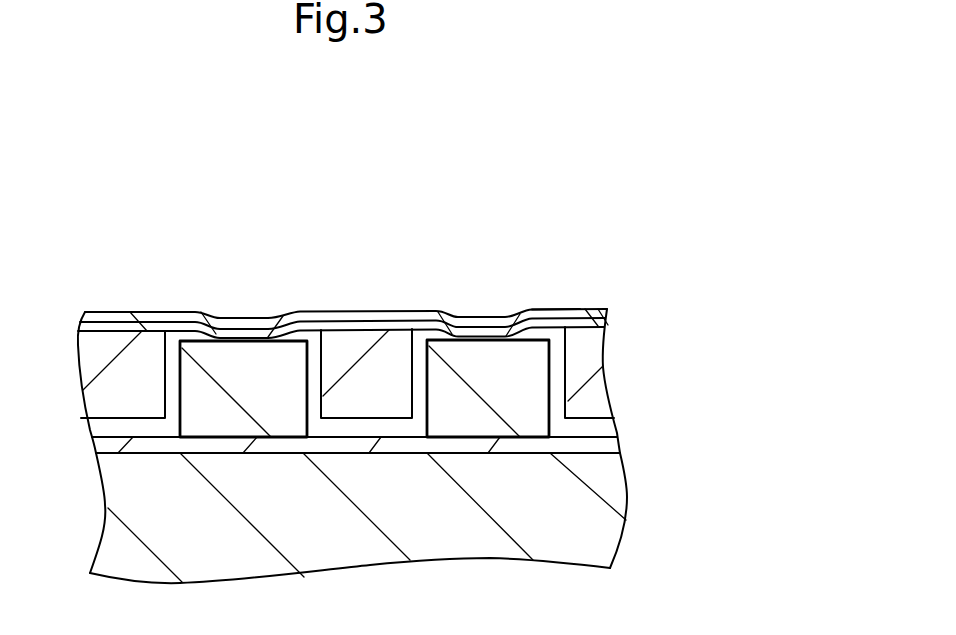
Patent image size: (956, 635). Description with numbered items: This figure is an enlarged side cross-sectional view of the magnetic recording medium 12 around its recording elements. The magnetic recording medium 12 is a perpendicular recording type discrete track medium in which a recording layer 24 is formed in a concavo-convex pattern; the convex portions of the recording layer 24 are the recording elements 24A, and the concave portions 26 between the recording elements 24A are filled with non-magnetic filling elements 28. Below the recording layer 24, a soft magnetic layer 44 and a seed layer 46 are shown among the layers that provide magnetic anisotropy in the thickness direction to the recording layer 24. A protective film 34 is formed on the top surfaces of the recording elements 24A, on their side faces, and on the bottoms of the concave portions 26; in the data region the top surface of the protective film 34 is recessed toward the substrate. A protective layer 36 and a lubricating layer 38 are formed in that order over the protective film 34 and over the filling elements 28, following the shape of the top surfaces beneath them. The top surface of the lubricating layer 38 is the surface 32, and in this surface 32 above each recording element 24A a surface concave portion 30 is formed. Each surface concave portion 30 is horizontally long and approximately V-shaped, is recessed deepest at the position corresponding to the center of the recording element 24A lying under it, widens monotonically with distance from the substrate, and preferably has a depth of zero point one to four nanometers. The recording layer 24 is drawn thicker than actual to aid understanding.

The magnetic recording medium 12 is at (367, 158).
The recording layer 24 is at (613, 372).
The recording element 24A is at (503, 352).
The concave portion 26 is at (350, 353).
The non-magnetic filling element 28 is at (387, 350).
The surface concave portion 30 is at (252, 314).
The surface 32 is at (134, 312).
The protective film 34 is at (309, 385).
The protective layer 36 is at (607, 323).
The lubricating layer 38 is at (608, 313).
The soft magnetic layer 44 is at (628, 507).
The seed layer 46 is at (617, 443).